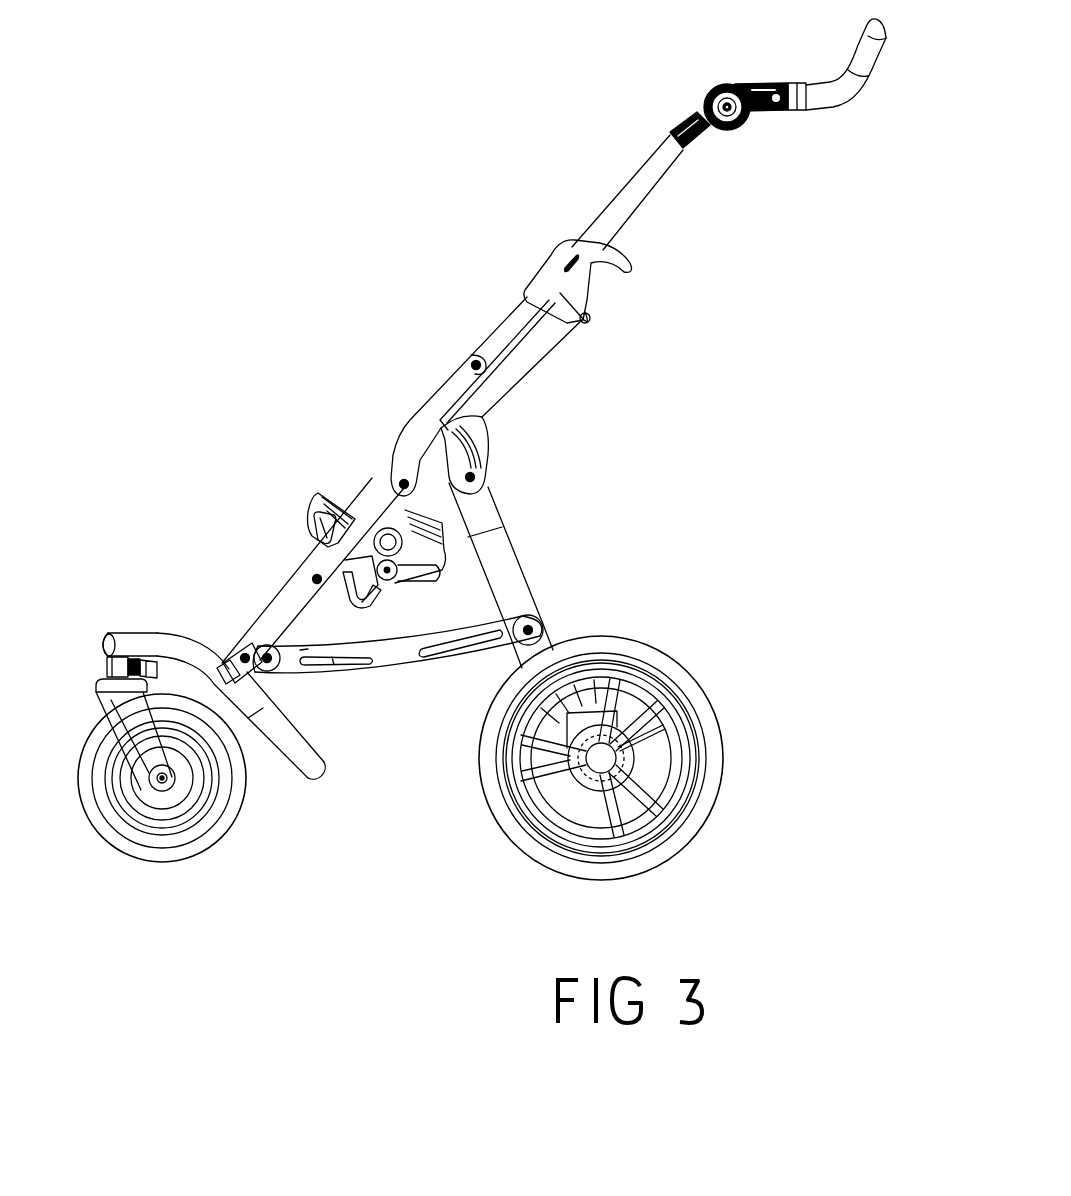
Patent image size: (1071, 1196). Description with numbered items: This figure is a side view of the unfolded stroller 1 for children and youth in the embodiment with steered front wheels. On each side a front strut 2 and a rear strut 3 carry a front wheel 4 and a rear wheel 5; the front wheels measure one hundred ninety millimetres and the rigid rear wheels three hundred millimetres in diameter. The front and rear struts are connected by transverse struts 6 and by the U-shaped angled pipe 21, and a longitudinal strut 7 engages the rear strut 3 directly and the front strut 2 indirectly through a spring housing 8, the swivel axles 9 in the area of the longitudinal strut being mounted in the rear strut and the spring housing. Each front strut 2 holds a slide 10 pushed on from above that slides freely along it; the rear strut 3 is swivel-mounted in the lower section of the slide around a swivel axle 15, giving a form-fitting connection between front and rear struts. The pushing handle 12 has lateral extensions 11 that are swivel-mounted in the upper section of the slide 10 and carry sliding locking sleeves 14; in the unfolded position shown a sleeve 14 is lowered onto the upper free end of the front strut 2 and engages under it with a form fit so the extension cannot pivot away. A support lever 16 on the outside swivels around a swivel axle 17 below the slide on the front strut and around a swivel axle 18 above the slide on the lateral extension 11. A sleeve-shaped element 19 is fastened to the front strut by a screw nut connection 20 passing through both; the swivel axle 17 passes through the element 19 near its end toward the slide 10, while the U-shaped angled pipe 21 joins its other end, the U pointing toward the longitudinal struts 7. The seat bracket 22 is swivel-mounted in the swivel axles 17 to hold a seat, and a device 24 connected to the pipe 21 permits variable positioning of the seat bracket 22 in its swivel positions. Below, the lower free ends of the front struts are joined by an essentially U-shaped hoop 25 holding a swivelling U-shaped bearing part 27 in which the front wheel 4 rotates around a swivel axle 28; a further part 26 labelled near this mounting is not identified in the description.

The stroller 1 is at (325, 197).
The front struts 2 is at (527, 363).
The rear struts 3 is at (503, 557).
The front wheels 4 is at (212, 819).
The rear wheels 5 is at (707, 802).
The transverse struts 6 is at (603, 758).
The longitudinal struts 7 is at (389, 668).
The spring housings 8 is at (304, 650).
The swivel axles 9 is at (270, 663).
The slide 10 is at (482, 455).
The lateral extensions 11 is at (503, 332).
The pushing handle 12 is at (800, 172).
The sliding locking sleeves 14 is at (556, 270).
The swivel axles 15 is at (490, 477).
The support levers 16 is at (432, 410).
The swivel axles 17 is at (404, 484).
The swivel axles 18 is at (478, 360).
The sleeve-shaped element 19 is at (328, 558).
The screw nut connection 20 is at (317, 580).
The U-shaped angled pipe 21 is at (349, 597).
The seat bracket 22 is at (347, 447).
The device 24 is at (394, 603).
The U-shaped hoop 25 is at (282, 750).
The fork head 26 is at (110, 663).
The U-shaped bearing part 27 is at (113, 700).
The swivel axle 28 is at (158, 781).